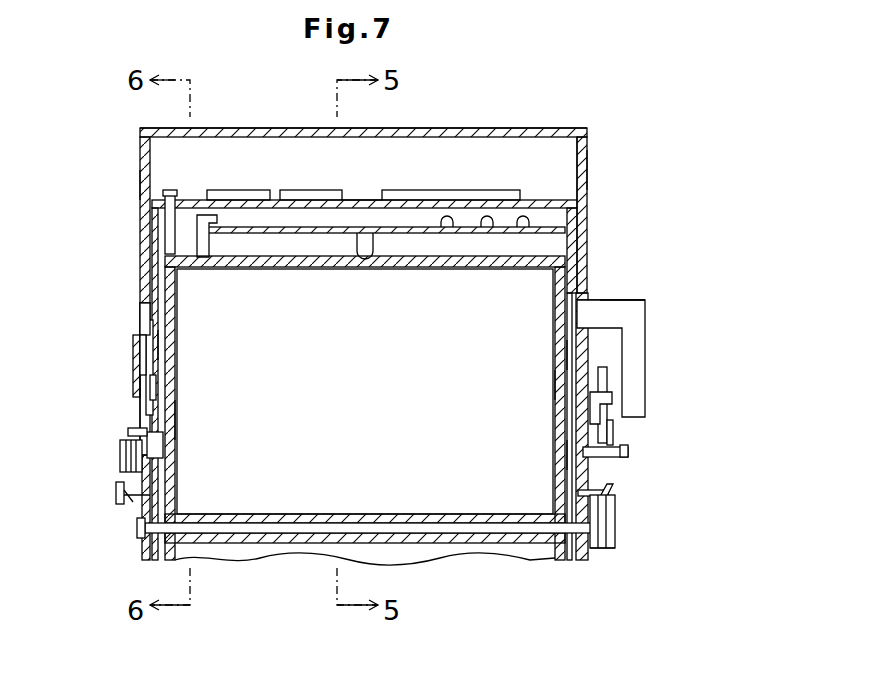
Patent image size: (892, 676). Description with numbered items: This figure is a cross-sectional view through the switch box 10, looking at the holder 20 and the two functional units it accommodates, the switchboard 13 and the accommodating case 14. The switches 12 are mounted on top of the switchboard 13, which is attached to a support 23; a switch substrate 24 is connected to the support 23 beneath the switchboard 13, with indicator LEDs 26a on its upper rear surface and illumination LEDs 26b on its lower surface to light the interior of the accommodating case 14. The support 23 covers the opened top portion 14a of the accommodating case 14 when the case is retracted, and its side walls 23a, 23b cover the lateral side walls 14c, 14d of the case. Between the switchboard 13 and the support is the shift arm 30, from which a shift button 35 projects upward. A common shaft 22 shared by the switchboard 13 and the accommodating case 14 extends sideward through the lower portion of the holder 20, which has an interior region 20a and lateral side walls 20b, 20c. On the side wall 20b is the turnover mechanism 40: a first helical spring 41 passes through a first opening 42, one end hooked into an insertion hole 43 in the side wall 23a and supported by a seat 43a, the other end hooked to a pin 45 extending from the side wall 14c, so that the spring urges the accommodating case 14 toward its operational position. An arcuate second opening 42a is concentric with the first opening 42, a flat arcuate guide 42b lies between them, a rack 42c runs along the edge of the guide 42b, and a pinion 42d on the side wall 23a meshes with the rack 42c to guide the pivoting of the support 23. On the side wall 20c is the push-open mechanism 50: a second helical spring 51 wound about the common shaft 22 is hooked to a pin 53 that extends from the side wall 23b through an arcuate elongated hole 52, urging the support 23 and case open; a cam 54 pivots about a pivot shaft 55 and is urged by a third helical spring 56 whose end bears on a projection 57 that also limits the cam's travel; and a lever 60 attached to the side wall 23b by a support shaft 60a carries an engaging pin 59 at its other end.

The switch box 10 is at (690, 128).
The switches 12 is at (235, 190).
The switchboard 13 is at (345, 199).
The accommodating case 14 is at (388, 466).
The opened top portion 14a is at (299, 270).
The side wall 14c is at (175, 420).
The side wall 14d is at (553, 385).
The holder 20 is at (585, 128).
The cover top space 20a is at (545, 150).
The lateral side wall 20b is at (140, 185).
The lateral side wall 20c is at (588, 170).
The common shaft 22 is at (311, 524).
The support 23 is at (572, 235).
The side wall 23a is at (158, 345).
The side wall 23b is at (567, 355).
The switch substrate 24 is at (540, 234).
The indicator LEDs 26a is at (523, 222).
The illumination LEDs 26b is at (373, 258).
The shift arm 30 is at (197, 258).
The shift button 35 is at (171, 191).
The turnover mechanism 40 is at (105, 505).
The first helical spring 41 is at (120, 455).
The first opening 42 is at (148, 400).
The second opening 42a is at (140, 305).
The guide 42b is at (153, 388).
The rack 42c is at (134, 362).
The pinion 42d is at (141, 325).
The insertion hole 43 is at (160, 440).
The seat 43a is at (130, 430).
The pin 45 is at (117, 490).
The push-open mechanism 50 is at (705, 250).
The second helical spring 51 is at (604, 549).
The elongated hole 52 is at (570, 455).
The pin 53 is at (616, 512).
The cam 54 is at (606, 352).
The pivot shaft 55 is at (612, 458).
The third helical spring 56 is at (614, 390).
The projection 57 is at (612, 490).
The engaging pin 59 is at (614, 428).
The lever 60 is at (646, 318).
The support shaft 60a is at (627, 300).